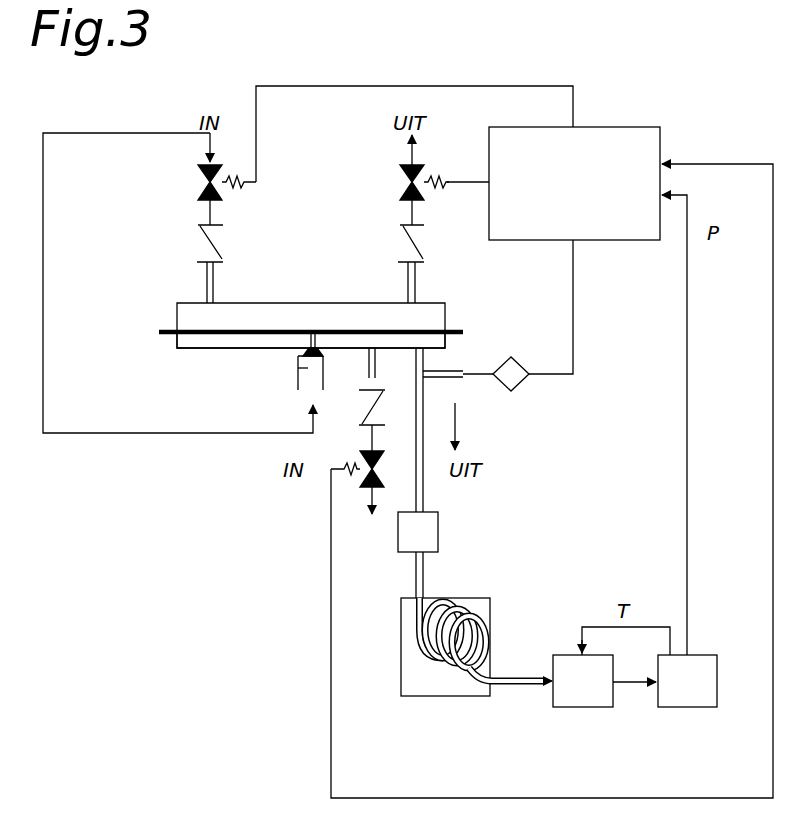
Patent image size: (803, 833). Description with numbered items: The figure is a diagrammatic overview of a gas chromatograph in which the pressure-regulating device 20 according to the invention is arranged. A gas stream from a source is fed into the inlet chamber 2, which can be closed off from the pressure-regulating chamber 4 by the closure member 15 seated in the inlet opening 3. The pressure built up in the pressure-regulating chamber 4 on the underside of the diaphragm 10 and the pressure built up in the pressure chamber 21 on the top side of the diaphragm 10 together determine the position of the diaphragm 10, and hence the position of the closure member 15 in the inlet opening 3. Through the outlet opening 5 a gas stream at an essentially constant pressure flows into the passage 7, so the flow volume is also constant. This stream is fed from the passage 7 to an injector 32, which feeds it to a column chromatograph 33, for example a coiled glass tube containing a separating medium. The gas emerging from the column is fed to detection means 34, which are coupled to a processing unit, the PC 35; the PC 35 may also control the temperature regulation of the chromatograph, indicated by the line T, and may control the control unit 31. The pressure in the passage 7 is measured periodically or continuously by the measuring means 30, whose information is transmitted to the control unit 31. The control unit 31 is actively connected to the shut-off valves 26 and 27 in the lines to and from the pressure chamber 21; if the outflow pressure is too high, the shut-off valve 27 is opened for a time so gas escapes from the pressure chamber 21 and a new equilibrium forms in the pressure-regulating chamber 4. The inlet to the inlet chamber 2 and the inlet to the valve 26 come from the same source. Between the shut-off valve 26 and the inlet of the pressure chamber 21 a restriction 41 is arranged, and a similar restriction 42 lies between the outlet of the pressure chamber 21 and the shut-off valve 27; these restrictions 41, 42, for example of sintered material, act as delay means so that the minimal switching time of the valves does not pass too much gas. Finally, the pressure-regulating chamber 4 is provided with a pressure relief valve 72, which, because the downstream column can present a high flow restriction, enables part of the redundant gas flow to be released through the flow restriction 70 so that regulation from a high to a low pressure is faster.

The inlet chamber 2 is at (298, 378).
The inlet opening 3 is at (313, 330).
The pressure-regulating chamber 4 is at (233, 342).
The outlet opening 5 is at (423, 356).
The discharge passage 7 is at (423, 488).
The diaphragm 10 is at (200, 328).
The closure member 15 is at (298, 367).
The device 20 is at (200, 358).
The pressure chamber 21 is at (258, 322).
The shut-off valve 26 is at (199, 187).
The shut-off valve 27 is at (400, 185).
The measuring means 30 is at (511, 357).
The control unit 31 is at (585, 152).
The injector 32 is at (427, 528).
The column chromatograph 33 is at (415, 682).
The detection means 34 is at (582, 697).
The PC 35 is at (687, 707).
The restriction 41 is at (198, 240).
The restriction 42 is at (398, 242).
The flow restriction 70 is at (372, 411).
The pressure relief valve 72 is at (350, 478).